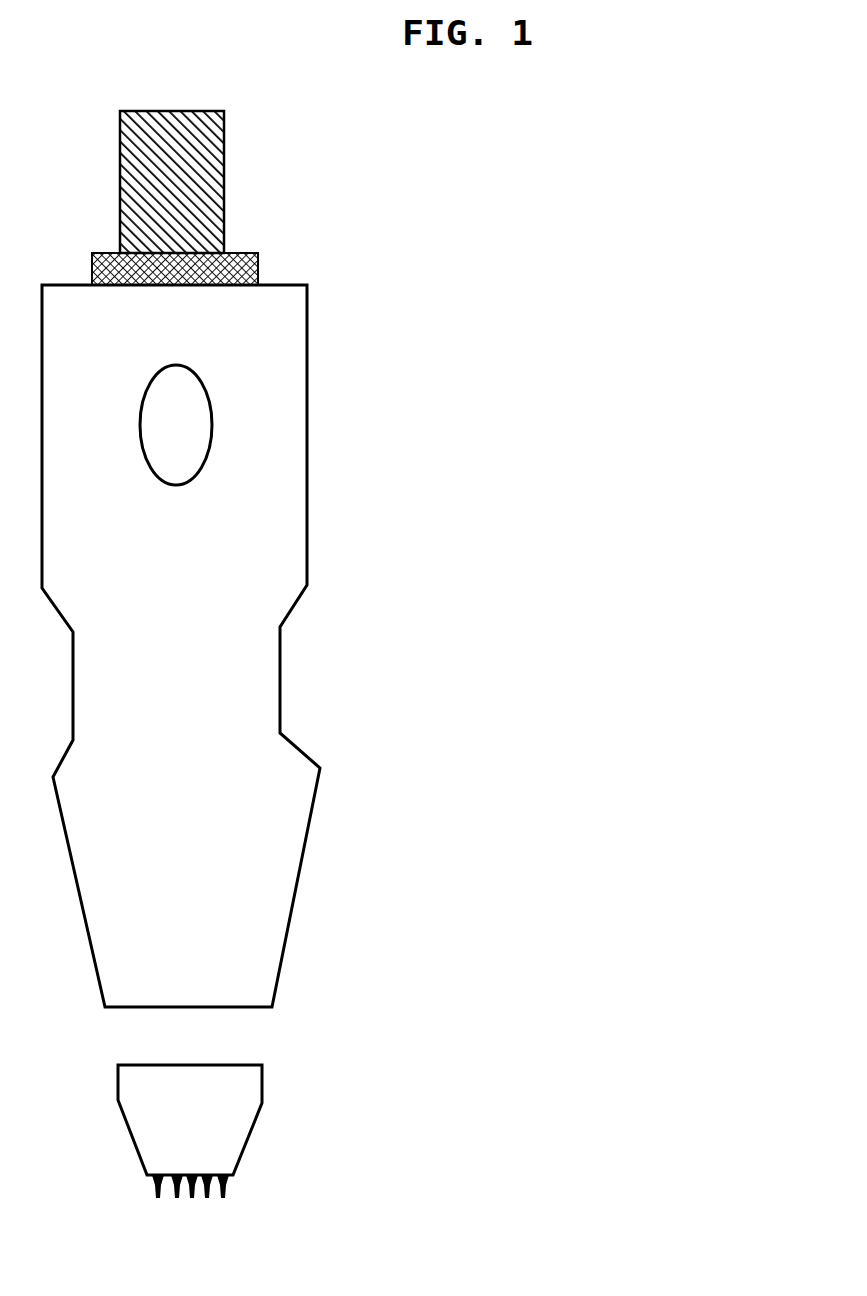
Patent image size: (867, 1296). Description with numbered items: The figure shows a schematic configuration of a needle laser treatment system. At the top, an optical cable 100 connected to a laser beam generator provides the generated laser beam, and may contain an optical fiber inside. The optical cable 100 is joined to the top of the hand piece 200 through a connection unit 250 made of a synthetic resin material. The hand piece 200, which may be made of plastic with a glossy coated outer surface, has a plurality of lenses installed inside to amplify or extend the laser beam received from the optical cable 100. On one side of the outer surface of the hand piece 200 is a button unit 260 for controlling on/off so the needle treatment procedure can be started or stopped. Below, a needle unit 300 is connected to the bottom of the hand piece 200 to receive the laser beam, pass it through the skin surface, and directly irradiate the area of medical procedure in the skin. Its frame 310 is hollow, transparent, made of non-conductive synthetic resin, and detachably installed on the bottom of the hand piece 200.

The optical cable 100 is at (223, 167).
The hand piece 200 is at (295, 530).
The connection unit 250 is at (252, 275).
The button unit 260 is at (188, 425).
The needle unit 300 is at (233, 1107).
The frame 310 is at (226, 1185).